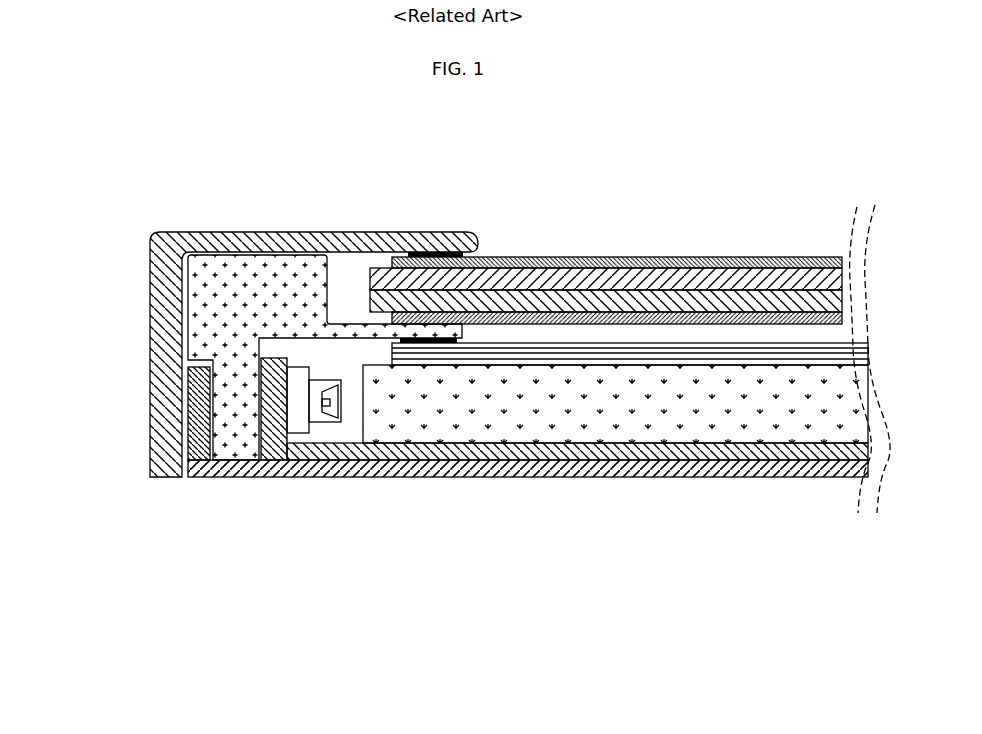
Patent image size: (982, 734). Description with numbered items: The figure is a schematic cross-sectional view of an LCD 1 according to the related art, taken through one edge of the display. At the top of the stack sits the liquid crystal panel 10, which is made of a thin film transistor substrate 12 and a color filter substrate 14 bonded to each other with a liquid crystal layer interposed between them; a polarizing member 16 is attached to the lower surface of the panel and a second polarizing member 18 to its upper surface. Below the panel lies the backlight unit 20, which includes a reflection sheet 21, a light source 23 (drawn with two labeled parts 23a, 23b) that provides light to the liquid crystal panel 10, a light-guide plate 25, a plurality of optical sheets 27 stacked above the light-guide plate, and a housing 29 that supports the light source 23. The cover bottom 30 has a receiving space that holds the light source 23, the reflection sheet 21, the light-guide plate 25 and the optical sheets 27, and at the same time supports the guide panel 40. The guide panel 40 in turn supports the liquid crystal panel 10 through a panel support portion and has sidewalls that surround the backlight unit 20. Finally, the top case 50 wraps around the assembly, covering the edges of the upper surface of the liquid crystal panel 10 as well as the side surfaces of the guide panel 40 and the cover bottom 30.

The LCD 1 is at (192, 205).
The liquid crystal panel 10 is at (606, 233).
The thin film transistor substrate 12 is at (667, 300).
The color filter substrate 14 is at (610, 278).
The polarizing member 16 is at (567, 185).
The polarizing member 18 is at (557, 262).
The backlight unit 20 is at (528, 506).
The reflection sheet 21 is at (713, 452).
The light source 23 is at (316, 474).
The printed circuit board 23a is at (300, 428).
The connector 23b is at (326, 415).
The light-guide plate 25 is at (605, 408).
The optical sheets 27 is at (630, 463).
The housing 29 is at (471, 470).
The cover bottom 30 is at (200, 427).
The guide panel 40 is at (218, 322).
The top case 50 is at (152, 264).